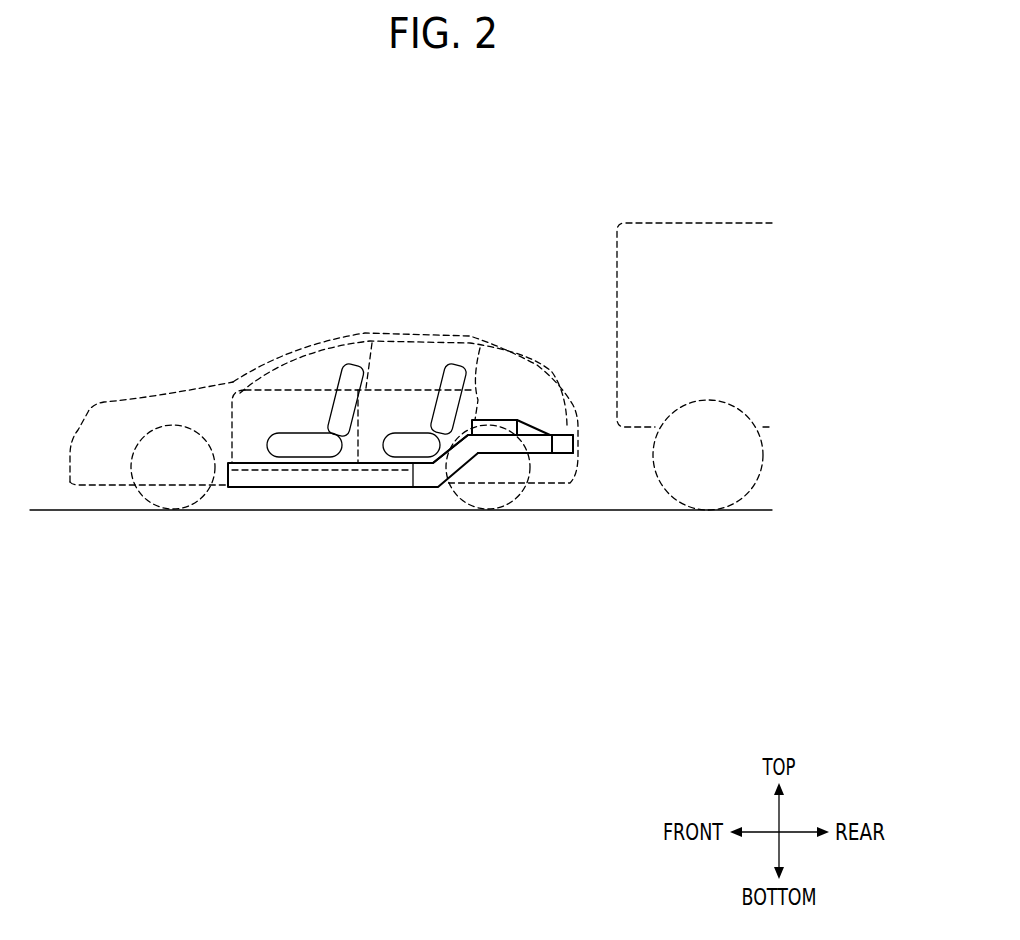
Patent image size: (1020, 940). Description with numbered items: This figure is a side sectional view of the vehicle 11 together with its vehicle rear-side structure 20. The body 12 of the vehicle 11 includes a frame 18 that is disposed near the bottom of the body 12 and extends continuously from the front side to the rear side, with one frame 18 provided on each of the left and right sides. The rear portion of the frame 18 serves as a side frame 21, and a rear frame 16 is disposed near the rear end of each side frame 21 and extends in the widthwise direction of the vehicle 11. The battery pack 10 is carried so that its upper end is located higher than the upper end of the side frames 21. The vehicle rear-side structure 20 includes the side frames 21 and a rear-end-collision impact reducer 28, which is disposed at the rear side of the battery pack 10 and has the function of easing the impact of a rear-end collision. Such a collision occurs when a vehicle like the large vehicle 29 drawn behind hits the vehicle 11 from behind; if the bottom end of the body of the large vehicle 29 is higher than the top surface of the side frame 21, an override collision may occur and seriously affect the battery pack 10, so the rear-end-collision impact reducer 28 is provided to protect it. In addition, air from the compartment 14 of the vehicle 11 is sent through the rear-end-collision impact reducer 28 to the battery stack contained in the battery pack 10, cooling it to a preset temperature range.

The battery pack 10 is at (488, 418).
The vehicle 11 is at (430, 197).
The body 12 is at (245, 370).
The compartment 14 is at (333, 375).
The rear frame 16 is at (568, 455).
The frame 18 is at (368, 487).
The vehicle rear-side structure 20 is at (455, 537).
The side frame 21 is at (510, 455).
The rear-end-collision impact reducer 28 is at (533, 425).
The large vehicle 29 is at (710, 222).